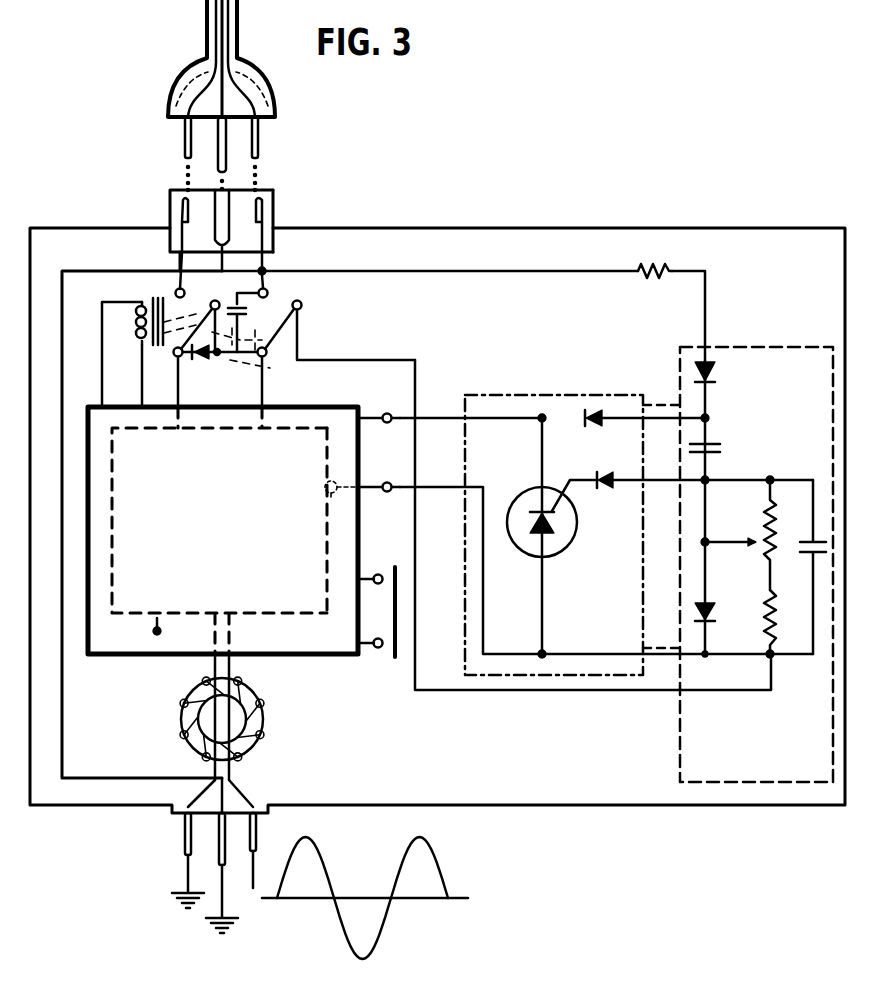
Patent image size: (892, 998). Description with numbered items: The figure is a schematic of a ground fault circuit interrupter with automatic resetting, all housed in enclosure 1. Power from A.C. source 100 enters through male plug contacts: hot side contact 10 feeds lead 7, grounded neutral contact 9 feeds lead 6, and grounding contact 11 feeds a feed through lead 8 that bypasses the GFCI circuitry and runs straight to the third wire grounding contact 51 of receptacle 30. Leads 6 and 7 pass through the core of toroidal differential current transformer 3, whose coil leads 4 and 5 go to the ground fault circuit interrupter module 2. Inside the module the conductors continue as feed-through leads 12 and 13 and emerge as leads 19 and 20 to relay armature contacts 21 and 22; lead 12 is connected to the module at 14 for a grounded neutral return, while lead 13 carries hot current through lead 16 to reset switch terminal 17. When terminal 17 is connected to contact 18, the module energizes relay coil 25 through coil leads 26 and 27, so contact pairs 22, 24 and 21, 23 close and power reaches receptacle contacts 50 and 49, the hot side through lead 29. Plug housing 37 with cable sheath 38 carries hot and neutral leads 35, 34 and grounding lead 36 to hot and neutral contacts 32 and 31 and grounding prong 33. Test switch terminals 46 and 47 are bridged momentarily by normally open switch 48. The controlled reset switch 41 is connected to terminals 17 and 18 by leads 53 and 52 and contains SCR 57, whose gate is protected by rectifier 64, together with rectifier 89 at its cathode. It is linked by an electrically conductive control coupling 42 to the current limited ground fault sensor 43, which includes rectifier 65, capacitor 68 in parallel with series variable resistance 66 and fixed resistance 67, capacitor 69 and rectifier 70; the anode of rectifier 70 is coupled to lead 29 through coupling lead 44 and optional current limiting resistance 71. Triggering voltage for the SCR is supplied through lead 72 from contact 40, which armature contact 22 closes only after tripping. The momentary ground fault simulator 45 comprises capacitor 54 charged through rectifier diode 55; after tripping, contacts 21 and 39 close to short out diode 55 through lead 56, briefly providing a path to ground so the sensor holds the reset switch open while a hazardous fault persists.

The enclosure 1 is at (620, 218).
The ground fault circuit interrupter module 2 is at (139, 655).
The toroidal differential current transformer 3 is at (179, 714).
The transformer coil lead 4 is at (206, 670).
The transformer coil lead 5 is at (236, 670).
The grounded neutral lead 6 is at (200, 795).
The hot side lead 7 is at (243, 795).
The feed through lead 8 is at (130, 271).
The grounded neutral contact 9 is at (182, 837).
The hot side contact 10 is at (260, 836).
The grounding contact 11 is at (215, 852).
The feed-through lead 12 is at (112, 560).
The feed-through lead 13 is at (327, 570).
The module connection 14 is at (154, 633).
The lead 16 is at (324, 487).
The reset switch terminal 17 is at (390, 491).
The reset switch contact 18 is at (395, 400).
The lead 19 is at (178, 377).
The lead 20 is at (262, 377).
The relay armature contact 21 is at (210, 302).
The relay armature contact 22 is at (298, 302).
The grounded neutral side contact 23 is at (176, 292).
The hot side contact 24 is at (250, 263).
The relay coil 25 is at (133, 314).
The coil lead 26 is at (102, 372).
The coil lead 27 is at (142, 372).
The hot lead 29 is at (256, 214).
The receptacle 30 is at (204, 231).
The neutral plug contact 31 is at (184, 130).
The hot plug contact 32 is at (257, 125).
The grounding prong 33 is at (218, 170).
The neutral load lead 34 is at (172, 100).
The hot load lead 35 is at (271, 101).
The grounding lead 36 is at (190, 74).
The plug housing 37 is at (254, 74).
The cable sheath 38 is at (235, 12).
The contact 39 is at (243, 296).
The contact 40 is at (302, 306).
The controlled reset switch 41 is at (558, 396).
The control coupling 42 is at (667, 406).
The current limited ground fault sensor 43 is at (786, 347).
The coupling lead 44 is at (538, 270).
The momentary ground fault simulator 45 is at (264, 358).
The test switch terminal 46 is at (384, 648).
The test switch terminal 47 is at (392, 560).
The normally open test switch 48 is at (434, 602).
The neutral receptacle contact 49 is at (170, 217).
The hot receptacle contact 50 is at (274, 216).
The third wire grounding contact 51 is at (192, 216).
The lead 52 is at (456, 424).
The lead 53 is at (456, 488).
The capacitor 54 is at (266, 296).
The rectifier diode 55 is at (204, 361).
The lead 56 is at (217, 340).
The SCR 57 is at (534, 498).
The gate protective rectifier 64 is at (606, 489).
The rectifier 65 is at (709, 600).
The variable resistance 66 is at (761, 523).
The fixed resistance 67 is at (774, 601).
The capacitor 68 is at (809, 542).
The capacitor 69 is at (717, 444).
The rectifier 70 is at (706, 376).
The current limiting resistance 71 is at (642, 274).
The lead 72 is at (365, 366).
The rectifier 89 is at (596, 425).
The A.C. source 100 is at (320, 902).